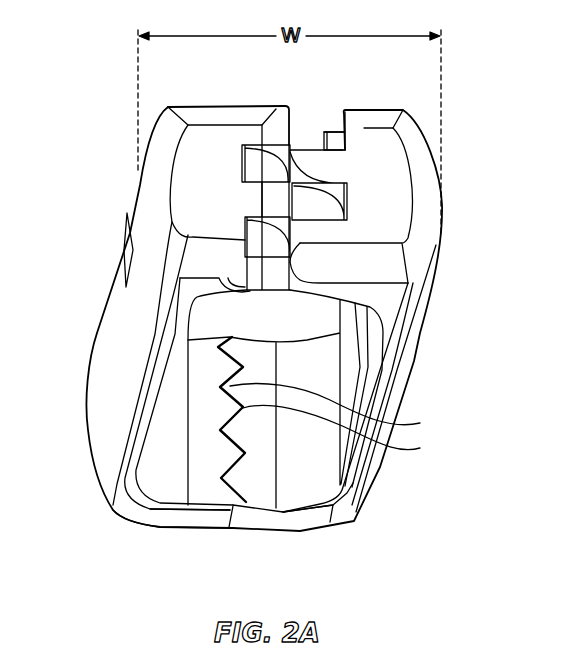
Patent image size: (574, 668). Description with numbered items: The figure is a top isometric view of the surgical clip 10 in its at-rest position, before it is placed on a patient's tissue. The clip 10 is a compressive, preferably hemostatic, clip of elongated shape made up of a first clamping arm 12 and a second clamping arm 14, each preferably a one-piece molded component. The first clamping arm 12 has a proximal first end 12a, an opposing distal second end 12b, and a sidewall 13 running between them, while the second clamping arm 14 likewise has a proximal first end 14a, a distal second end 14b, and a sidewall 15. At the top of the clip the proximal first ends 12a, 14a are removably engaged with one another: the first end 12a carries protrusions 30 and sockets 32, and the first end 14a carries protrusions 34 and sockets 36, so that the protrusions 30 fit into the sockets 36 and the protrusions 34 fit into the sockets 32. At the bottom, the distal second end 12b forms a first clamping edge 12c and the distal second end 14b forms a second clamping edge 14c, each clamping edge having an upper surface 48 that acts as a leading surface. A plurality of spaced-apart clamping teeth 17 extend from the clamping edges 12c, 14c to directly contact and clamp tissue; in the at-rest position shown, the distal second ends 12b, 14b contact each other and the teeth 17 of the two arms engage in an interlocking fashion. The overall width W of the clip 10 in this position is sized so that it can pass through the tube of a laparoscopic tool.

The clip 10 is at (118, 78).
The first clamping arm 12 is at (115, 308).
The proximal first end 12a is at (157, 157).
The distal second end 12b is at (160, 531).
The first clamping edge 12c is at (157, 497).
The sidewall 13 is at (100, 343).
The second clamping arm 14 is at (412, 362).
The proximal first end 14a is at (434, 193).
The distal second end 14b is at (317, 533).
The second clamping edge 14c is at (305, 353).
The sidewall 15 is at (418, 345).
The clamping teeth 17 is at (334, 419).
The protrusions 30 is at (273, 123).
The sockets 32 is at (255, 157).
The protrusions 34 is at (307, 160).
The sockets 36 is at (314, 133).
The upper surface 48 is at (173, 491).